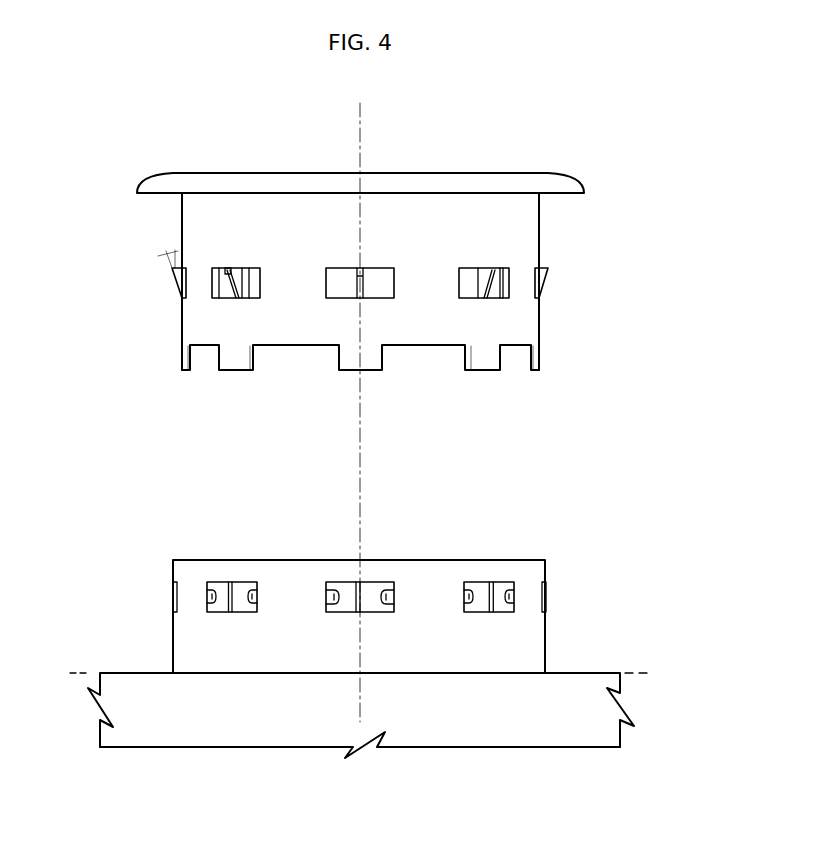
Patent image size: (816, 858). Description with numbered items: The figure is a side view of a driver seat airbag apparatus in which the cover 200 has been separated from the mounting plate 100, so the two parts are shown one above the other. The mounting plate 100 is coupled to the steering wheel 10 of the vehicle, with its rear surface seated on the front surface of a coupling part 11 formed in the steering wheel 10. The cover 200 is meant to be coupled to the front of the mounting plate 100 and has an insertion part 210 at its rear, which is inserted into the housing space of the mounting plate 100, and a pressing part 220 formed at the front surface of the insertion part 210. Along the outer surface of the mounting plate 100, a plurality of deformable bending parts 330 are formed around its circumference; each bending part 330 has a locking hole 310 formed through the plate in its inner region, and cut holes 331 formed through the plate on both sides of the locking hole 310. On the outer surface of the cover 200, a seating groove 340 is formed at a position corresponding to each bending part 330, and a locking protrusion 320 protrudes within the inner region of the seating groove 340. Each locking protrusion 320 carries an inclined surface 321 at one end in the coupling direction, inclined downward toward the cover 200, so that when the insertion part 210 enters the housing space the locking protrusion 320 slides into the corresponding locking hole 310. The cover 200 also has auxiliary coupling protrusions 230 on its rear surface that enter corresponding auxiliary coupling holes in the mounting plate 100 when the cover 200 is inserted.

The steering wheel 10 is at (569, 687).
The coupling part 11 is at (515, 723).
The mounting plate 100 is at (525, 572).
The cover 200 is at (456, 209).
The insertion part 210 is at (512, 223).
The pressing part 220 is at (403, 180).
The auxiliary coupling protrusion 230 is at (238, 366).
The locking hole 310 is at (363, 598).
The locking protrusion 320 is at (228, 270).
The inclined surface 321 is at (242, 288).
The bending part 330 is at (345, 600).
The cut hole 331 is at (205, 606).
The seating groove 340 is at (345, 283).